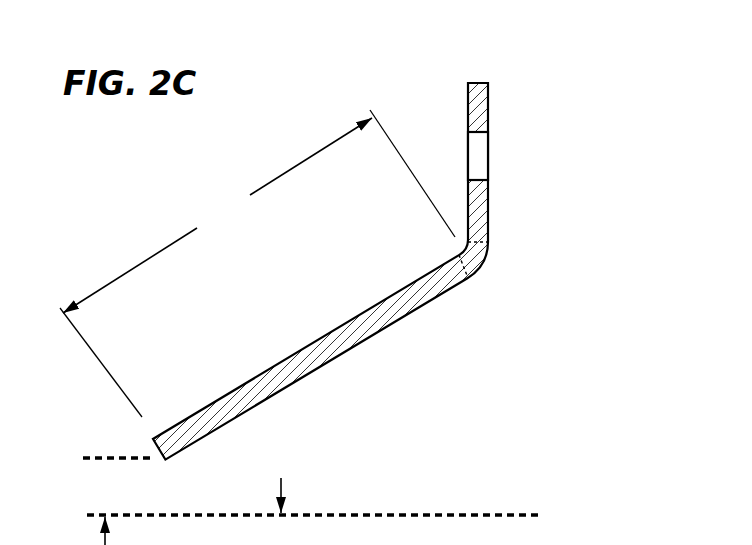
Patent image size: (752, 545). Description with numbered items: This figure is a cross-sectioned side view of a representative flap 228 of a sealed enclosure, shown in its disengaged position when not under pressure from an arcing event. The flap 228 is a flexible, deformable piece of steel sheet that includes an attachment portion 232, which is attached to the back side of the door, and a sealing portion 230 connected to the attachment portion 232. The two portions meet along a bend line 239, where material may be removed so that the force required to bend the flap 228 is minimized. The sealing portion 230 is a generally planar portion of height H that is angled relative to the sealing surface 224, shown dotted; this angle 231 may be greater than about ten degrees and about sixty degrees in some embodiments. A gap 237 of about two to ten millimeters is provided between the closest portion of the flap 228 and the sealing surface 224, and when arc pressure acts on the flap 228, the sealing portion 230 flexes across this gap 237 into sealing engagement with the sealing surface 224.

The flap 228 is at (447, 102).
The sealing portion 230 is at (460, 245).
The angle 231 is at (242, 415).
The attachment portion 232 is at (500, 83).
The bend line 239 is at (497, 262).
The gap 237 is at (105, 457).
The sealing surface 224 is at (315, 512).